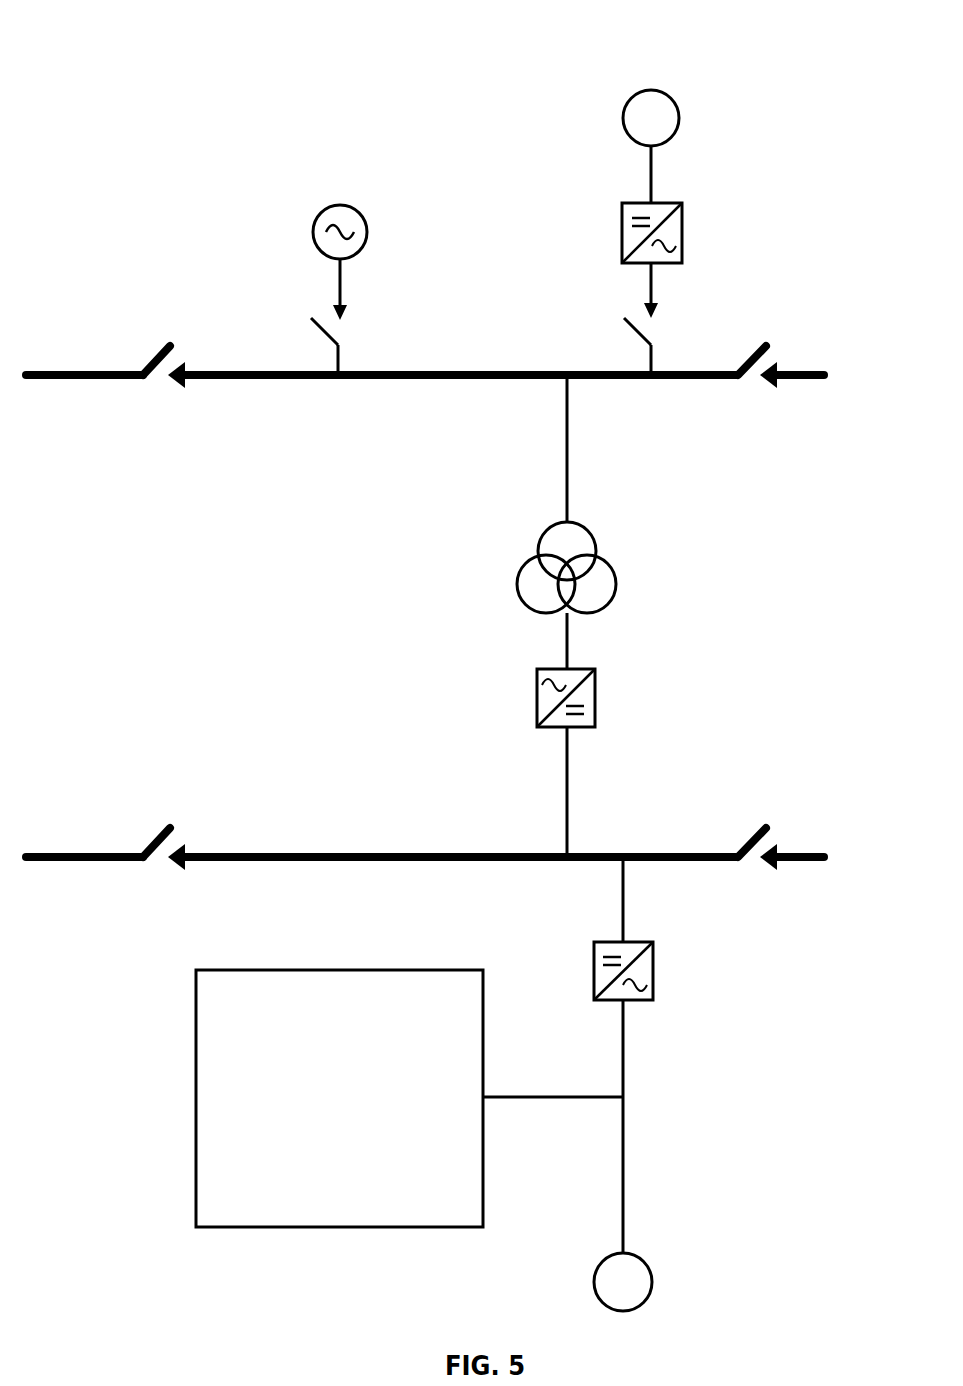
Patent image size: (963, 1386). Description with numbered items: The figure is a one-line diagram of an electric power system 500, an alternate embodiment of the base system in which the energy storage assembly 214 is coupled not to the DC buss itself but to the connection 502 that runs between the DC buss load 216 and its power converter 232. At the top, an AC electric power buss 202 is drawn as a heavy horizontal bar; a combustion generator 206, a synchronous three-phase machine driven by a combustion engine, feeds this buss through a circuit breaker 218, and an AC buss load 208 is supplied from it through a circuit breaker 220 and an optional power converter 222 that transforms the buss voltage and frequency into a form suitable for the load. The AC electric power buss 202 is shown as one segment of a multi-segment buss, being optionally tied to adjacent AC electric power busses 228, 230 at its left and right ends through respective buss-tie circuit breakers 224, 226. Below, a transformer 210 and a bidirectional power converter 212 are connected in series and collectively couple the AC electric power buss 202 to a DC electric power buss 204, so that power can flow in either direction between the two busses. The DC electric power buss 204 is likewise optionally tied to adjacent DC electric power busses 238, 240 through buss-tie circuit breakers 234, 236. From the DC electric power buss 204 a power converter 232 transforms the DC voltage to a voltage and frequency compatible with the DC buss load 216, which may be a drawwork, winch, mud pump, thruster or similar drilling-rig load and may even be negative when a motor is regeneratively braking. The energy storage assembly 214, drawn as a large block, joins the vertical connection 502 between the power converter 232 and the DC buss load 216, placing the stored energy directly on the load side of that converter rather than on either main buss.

The electric power system 500 is at (88, 54).
The AC electric power buss 202 is at (501, 371).
The DC electric power buss 204 is at (396, 851).
The combustion generator 206 is at (312, 232).
The AC buss load 208 is at (680, 119).
The transformer 210 is at (507, 532).
The power converter 212 is at (597, 697).
The energy storage assembly 214 is at (356, 1152).
The DC buss load 216 is at (654, 1282).
The circuit breaker 218 is at (362, 325).
The circuit breaker 220 is at (670, 325).
The power converter 222 is at (684, 232).
The buss-tie circuit breaker 224 is at (193, 346).
The buss-tie circuit breaker 226 is at (791, 347).
The adjacent AC electric power buss 228 is at (80, 380).
The adjacent AC electric power buss 230 is at (795, 380).
The power converter 232 is at (655, 968).
The buss-tie circuit breaker 234 is at (189, 829).
The buss-tie circuit breaker 236 is at (791, 829).
The adjacent DC electric power buss 238 is at (80, 862).
The adjacent DC electric power buss 240 is at (797, 862).
The connection line 502 is at (626, 1165).